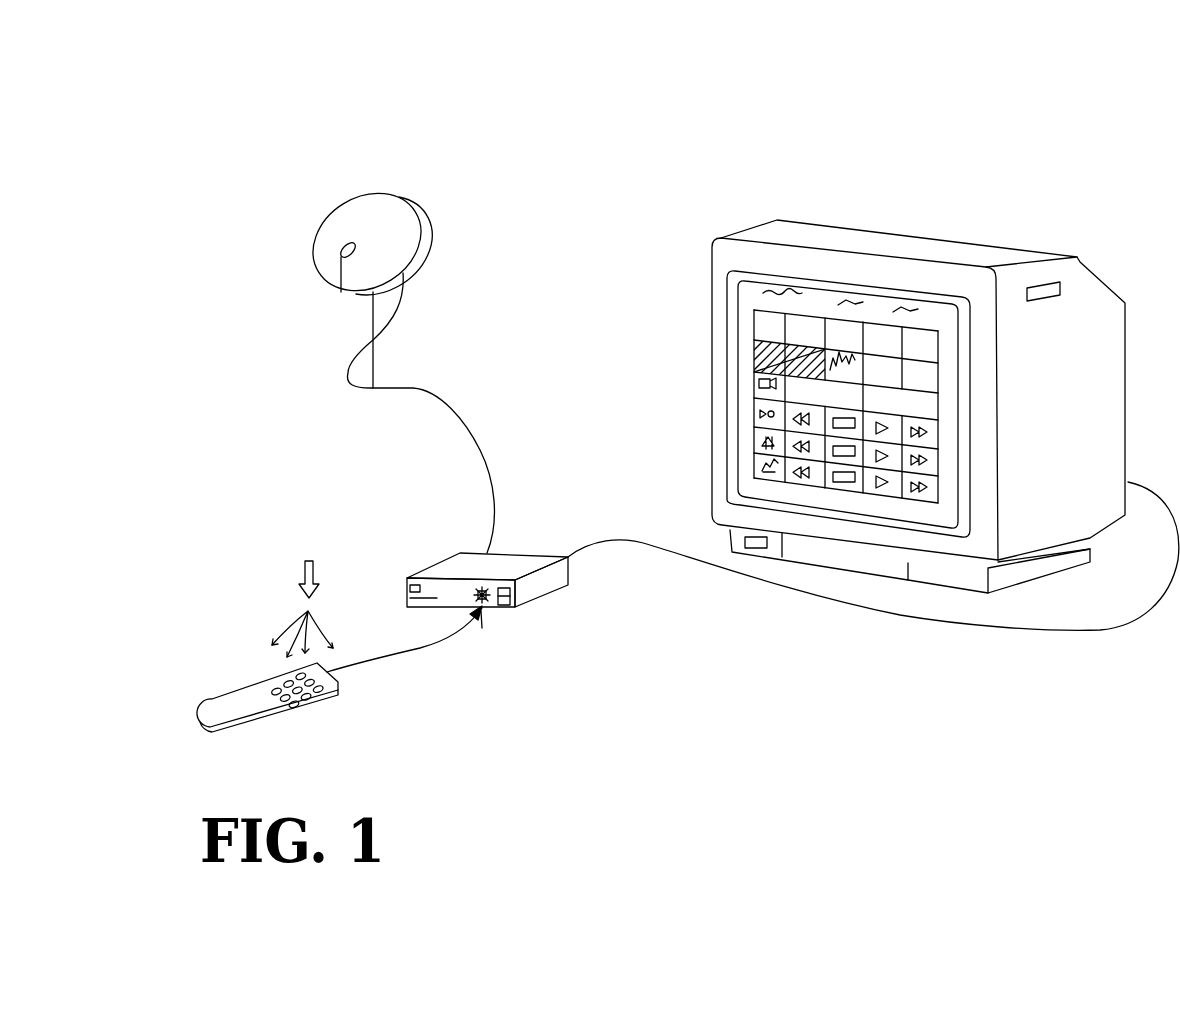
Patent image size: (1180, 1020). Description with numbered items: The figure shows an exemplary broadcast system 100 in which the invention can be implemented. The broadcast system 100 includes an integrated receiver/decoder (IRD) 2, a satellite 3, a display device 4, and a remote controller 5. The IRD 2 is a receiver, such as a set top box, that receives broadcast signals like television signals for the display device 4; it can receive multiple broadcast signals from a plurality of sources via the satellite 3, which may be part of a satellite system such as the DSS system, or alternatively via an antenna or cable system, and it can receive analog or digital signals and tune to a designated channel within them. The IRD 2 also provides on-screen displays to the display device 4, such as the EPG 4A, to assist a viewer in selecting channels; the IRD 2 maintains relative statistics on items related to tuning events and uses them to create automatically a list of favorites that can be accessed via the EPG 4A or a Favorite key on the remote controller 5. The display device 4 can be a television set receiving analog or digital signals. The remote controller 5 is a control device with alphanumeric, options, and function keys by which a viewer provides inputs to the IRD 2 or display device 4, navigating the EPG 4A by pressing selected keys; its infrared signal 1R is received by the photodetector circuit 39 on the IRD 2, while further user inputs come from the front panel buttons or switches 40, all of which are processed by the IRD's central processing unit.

The broadcast system 100 is at (1020, 93).
The satellite 3 is at (388, 202).
The integrated receiver/decoder (IRD) 2 is at (503, 563).
The front panel buttons or switches 40 is at (473, 592).
The photodetector circuit 39 is at (505, 607).
The display device 4 is at (948, 248).
The EPG 4A is at (747, 327).
The remote controller 5 is at (220, 733).
The infrared signal 1R is at (404, 639).